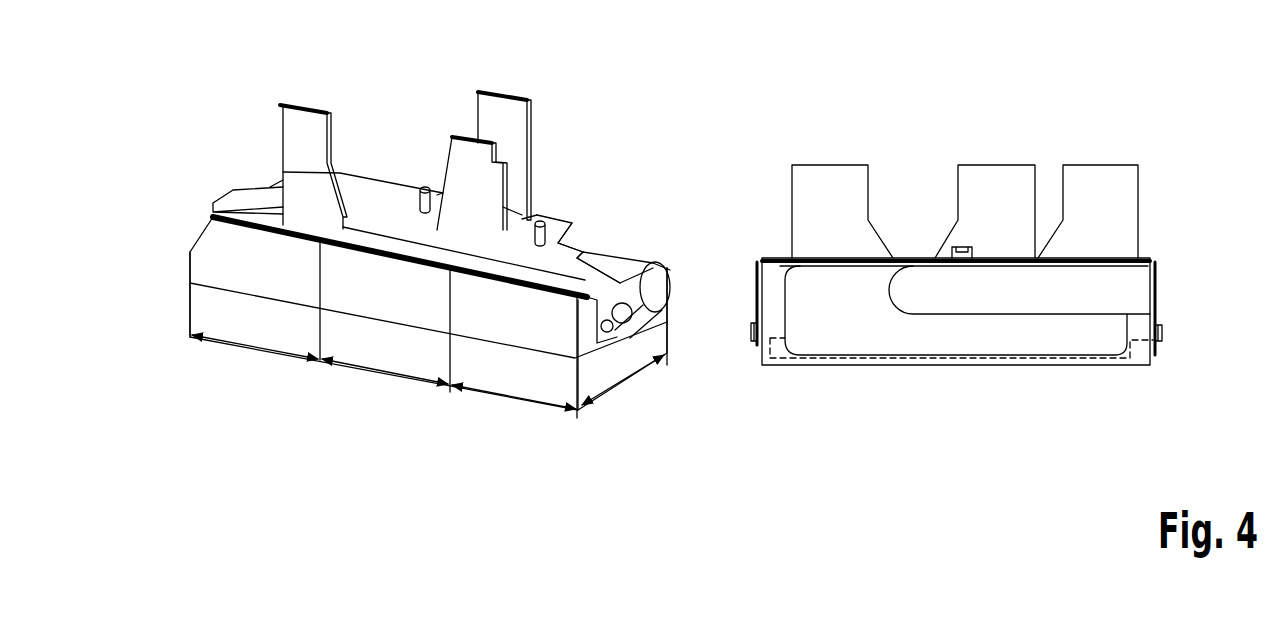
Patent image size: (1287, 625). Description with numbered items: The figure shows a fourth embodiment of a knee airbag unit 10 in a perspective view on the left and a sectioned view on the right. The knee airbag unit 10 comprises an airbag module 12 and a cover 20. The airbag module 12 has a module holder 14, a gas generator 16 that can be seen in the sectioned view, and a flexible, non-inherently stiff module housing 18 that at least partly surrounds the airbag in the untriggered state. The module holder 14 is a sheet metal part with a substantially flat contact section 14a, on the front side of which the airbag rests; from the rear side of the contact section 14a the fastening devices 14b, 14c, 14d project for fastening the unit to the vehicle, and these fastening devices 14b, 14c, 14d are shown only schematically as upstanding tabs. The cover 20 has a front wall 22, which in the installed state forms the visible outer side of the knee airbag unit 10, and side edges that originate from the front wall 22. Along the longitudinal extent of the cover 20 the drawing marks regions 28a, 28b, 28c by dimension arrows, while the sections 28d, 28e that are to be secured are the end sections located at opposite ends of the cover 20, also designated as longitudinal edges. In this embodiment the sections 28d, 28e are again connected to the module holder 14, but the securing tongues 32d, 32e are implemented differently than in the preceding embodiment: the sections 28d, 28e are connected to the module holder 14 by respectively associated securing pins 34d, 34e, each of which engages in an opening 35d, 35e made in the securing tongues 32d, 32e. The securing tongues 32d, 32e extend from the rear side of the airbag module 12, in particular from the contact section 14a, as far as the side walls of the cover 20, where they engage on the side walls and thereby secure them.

The knee airbag unit 10 is at (570, 70).
The airbag module 12 is at (559, 181).
The module holder 14 is at (378, 177).
The contact section 14a is at (405, 203).
The fastening device 14b is at (302, 127).
The fastening device 14c is at (470, 150).
The fastening device 14d is at (500, 110).
The gas generator 16 is at (1088, 298).
The module housing 18 is at (598, 255).
The cover 20 is at (290, 283).
The front wall 22 is at (499, 354).
The first housing section 28a is at (225, 340).
The second housing section 28b is at (367, 372).
The third housing section 28c is at (507, 403).
The section to be secured 28d is at (638, 377).
The section to be secured 28e is at (198, 296).
The securing tongue 32d is at (615, 290).
The securing tongue 32e is at (248, 197).
The securing pin 34d is at (607, 333).
The securing pin 34e is at (752, 332).
The opening 35d is at (615, 305).
The opening 35e is at (758, 323).